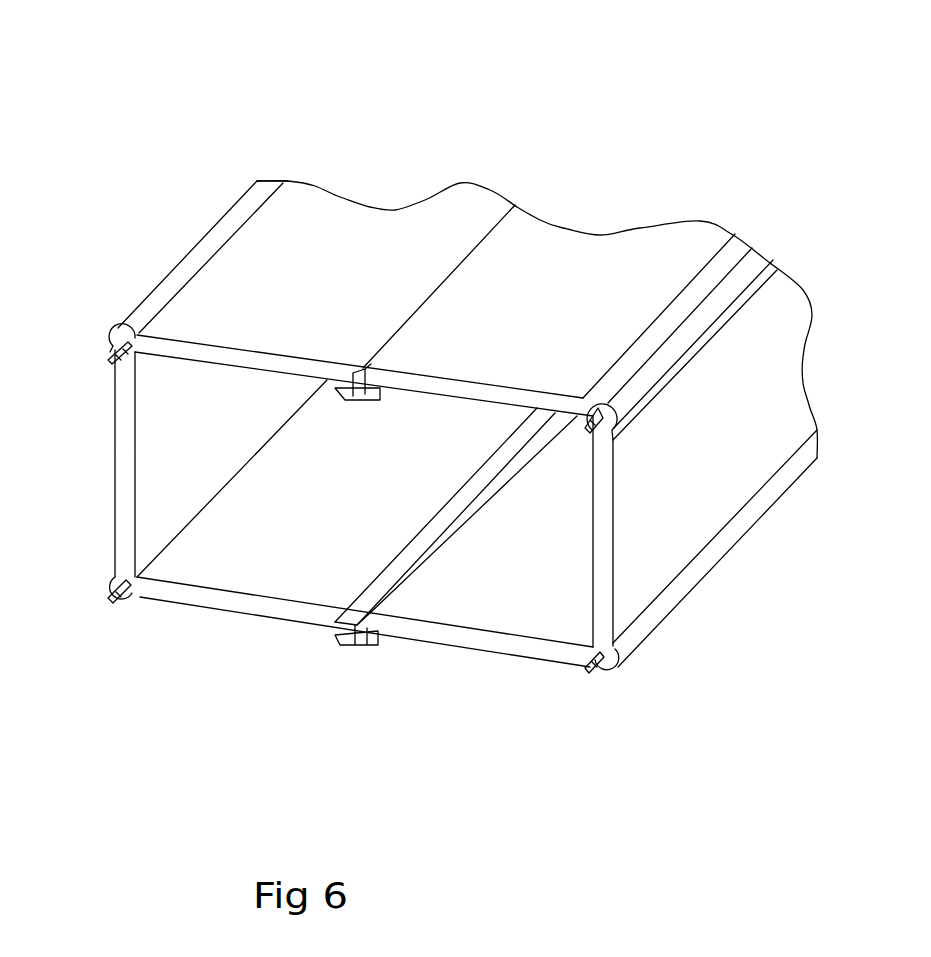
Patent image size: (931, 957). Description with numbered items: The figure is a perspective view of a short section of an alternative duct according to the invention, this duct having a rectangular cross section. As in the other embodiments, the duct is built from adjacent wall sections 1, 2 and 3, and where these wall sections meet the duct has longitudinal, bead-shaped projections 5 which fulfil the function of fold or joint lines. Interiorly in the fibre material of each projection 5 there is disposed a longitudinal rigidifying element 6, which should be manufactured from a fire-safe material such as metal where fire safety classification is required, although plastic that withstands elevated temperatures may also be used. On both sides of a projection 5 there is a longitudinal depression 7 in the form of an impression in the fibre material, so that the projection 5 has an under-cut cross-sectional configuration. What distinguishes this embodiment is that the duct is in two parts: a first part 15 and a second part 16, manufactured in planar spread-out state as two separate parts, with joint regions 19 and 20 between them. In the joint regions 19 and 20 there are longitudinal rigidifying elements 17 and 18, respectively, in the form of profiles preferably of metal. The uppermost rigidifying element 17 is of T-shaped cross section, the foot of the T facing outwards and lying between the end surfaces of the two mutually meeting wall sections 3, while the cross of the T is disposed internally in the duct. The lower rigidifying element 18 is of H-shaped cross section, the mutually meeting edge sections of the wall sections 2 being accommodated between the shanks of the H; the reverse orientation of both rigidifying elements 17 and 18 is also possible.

The wall section 1 is at (160, 445).
The wall section 2 is at (235, 577).
The wall section 3 is at (338, 212).
The bead-shaped projection 5 is at (202, 250).
The rigidifying element 6 is at (113, 357).
The longitudinal depression 7 is at (288, 183).
The first part 15 is at (400, 118).
The second part 16 is at (516, 760).
The rigidifying element 17 is at (370, 395).
The rigidifying element 18 is at (415, 566).
The joint region 19 is at (540, 175).
The joint region 20 is at (298, 687).